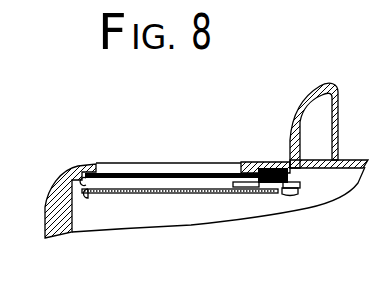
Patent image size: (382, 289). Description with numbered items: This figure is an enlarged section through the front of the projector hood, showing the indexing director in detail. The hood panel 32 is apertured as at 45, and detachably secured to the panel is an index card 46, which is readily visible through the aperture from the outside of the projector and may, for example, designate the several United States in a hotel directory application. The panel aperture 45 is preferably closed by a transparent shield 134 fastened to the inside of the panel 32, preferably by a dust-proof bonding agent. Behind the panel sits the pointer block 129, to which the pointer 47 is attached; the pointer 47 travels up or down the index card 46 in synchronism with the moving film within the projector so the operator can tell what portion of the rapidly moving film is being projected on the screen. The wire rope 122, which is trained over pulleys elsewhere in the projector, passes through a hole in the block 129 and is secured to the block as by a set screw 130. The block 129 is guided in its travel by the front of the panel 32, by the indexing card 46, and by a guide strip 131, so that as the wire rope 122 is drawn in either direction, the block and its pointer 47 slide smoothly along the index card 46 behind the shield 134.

The aperture 45 is at (101, 155).
The transparent shield 134 is at (112, 176).
The hood panel 32 is at (253, 163).
The pointer block 129 is at (265, 170).
The wire rope 122 is at (270, 165).
The guide strip 131 is at (291, 181).
The pointer 47 is at (242, 194).
The index card 46 is at (262, 186).
The set screw 130 is at (281, 193).